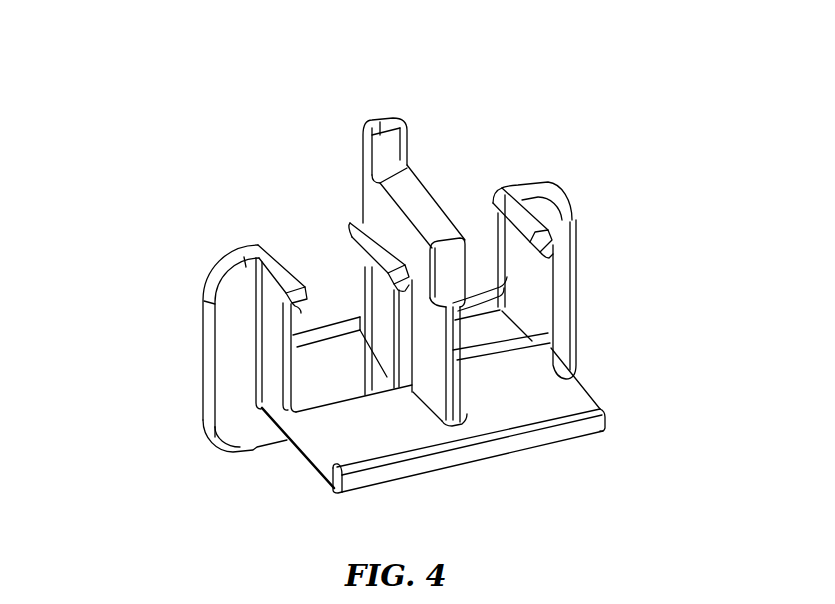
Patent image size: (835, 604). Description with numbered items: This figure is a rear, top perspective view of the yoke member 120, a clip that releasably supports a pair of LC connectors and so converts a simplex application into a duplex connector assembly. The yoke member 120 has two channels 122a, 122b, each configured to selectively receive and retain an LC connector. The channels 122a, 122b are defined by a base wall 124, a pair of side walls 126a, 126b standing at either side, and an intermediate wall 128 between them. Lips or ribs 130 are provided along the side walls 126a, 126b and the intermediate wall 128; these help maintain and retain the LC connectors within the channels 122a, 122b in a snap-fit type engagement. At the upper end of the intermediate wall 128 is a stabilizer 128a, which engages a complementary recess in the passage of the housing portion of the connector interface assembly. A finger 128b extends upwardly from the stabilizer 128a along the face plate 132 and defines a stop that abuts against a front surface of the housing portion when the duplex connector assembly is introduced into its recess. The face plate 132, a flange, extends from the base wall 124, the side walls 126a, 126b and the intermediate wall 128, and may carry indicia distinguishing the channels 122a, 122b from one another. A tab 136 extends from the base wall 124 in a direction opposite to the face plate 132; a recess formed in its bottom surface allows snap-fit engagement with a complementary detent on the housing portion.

The yoke member 120 is at (161, 73).
The channel 122a is at (470, 197).
The channel 122b is at (323, 237).
The base wall 124 is at (340, 378).
The side wall 126a is at (550, 282).
The side wall 126b is at (181, 350).
The intermediate wall 128 is at (453, 343).
The stabilizer 128a is at (420, 205).
The finger 128b is at (385, 118).
The lips or ribs 130 is at (347, 197).
The face plate 132 is at (240, 422).
The tab 136 is at (568, 400).